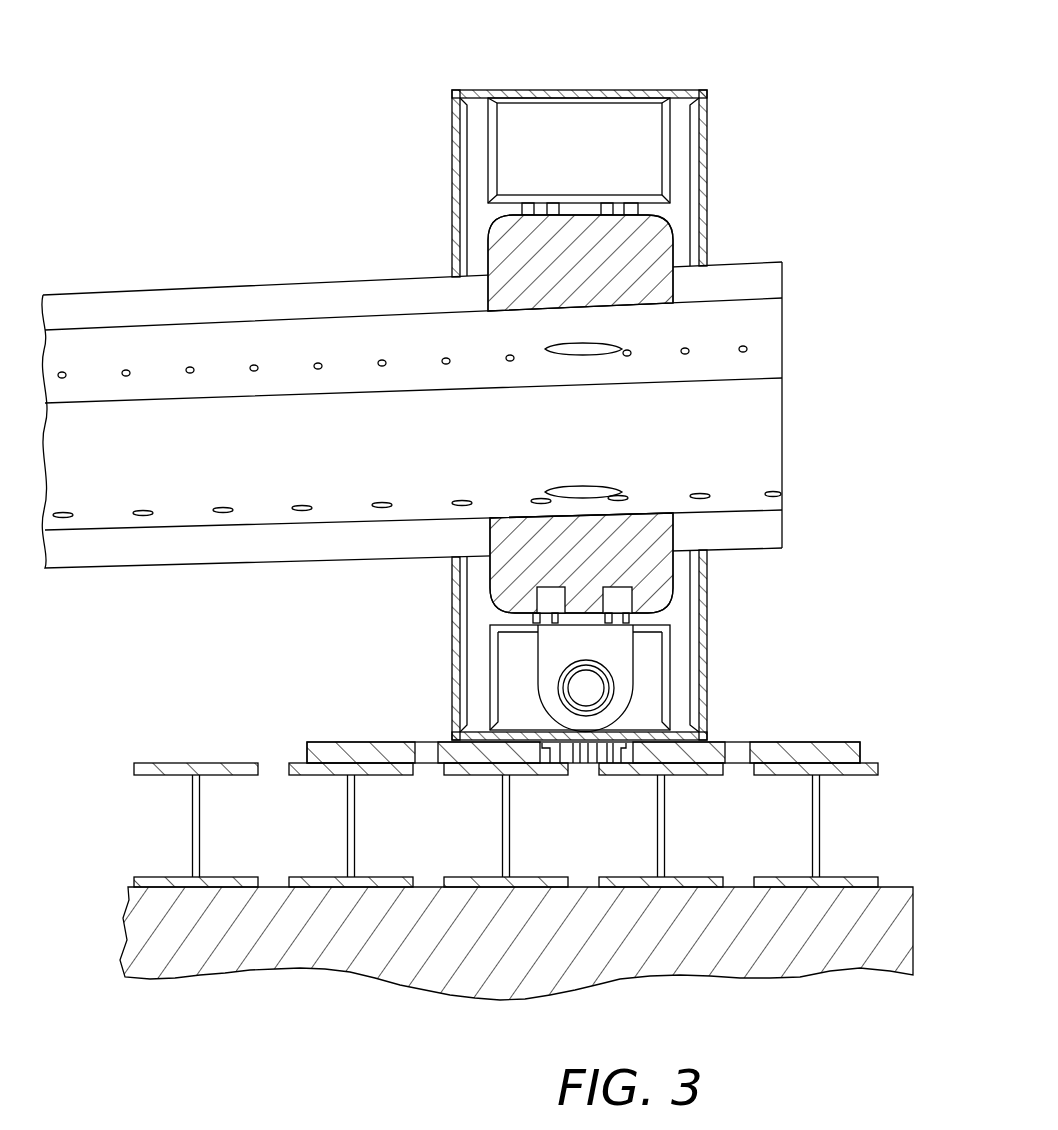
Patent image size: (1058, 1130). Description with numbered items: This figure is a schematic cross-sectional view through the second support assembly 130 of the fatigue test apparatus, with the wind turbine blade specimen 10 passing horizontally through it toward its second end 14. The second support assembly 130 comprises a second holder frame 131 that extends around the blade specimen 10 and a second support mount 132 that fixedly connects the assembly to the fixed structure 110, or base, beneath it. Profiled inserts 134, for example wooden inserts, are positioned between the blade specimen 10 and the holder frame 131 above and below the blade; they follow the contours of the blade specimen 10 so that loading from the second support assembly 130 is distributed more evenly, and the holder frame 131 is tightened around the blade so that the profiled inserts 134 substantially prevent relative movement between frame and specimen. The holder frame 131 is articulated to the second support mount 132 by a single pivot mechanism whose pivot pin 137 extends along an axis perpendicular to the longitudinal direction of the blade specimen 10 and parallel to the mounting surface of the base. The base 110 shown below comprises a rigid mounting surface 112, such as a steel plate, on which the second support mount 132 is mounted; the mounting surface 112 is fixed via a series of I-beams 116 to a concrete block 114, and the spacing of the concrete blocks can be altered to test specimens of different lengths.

The wind turbine blade specimen 10 is at (449, 394).
The second end 14 is at (784, 431).
The fixed structure 110 is at (516, 872).
The mounting surface 112 is at (327, 742).
The concrete block 114 is at (619, 975).
The I-beam 116 is at (350, 815).
The second support assembly 130 is at (584, 377).
The second holder frame 131 is at (684, 140).
The second support mount 132 is at (555, 650).
The profiled insert 134 is at (503, 242).
The pivot pin 137 is at (574, 686).